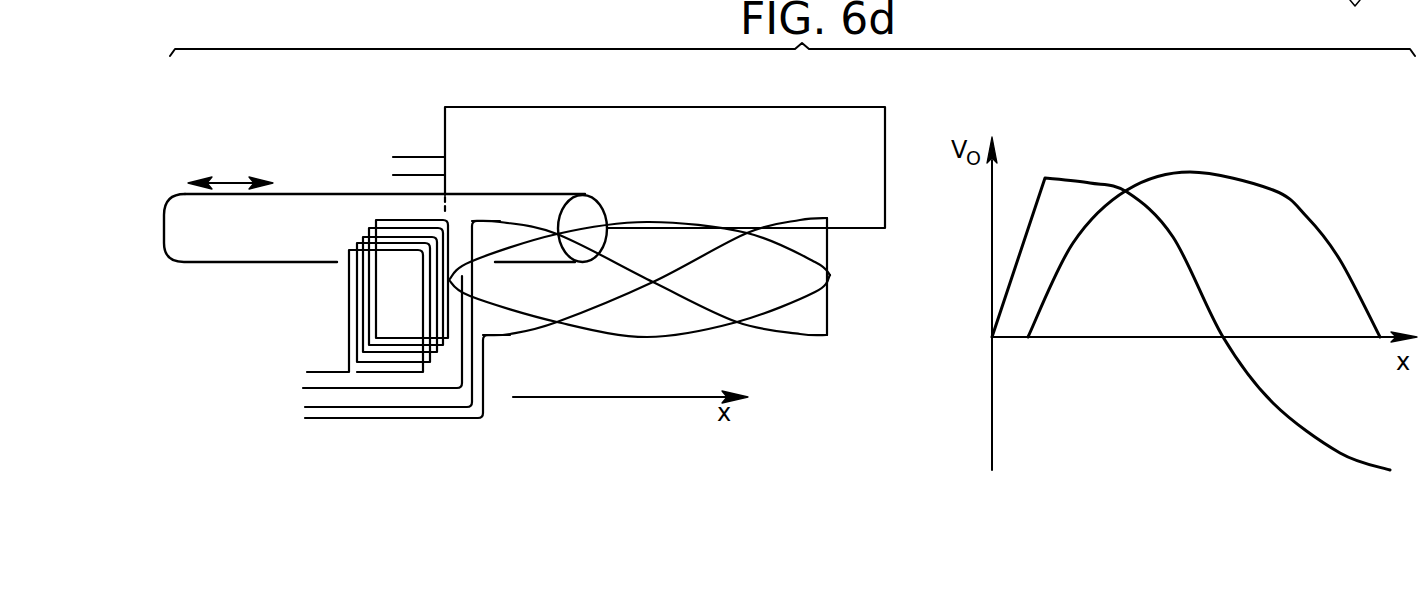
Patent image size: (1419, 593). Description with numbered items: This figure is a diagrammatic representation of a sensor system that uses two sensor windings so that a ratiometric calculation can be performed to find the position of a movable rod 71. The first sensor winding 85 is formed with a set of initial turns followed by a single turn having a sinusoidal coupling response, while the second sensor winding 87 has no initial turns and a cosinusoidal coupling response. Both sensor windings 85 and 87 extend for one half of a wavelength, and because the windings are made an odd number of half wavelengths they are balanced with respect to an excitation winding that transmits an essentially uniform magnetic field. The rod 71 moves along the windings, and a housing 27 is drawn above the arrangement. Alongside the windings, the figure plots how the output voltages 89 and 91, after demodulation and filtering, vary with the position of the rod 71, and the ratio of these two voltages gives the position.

The housing 27 is at (710, 107).
The rod 71 is at (296, 200).
The first sensor winding 85 is at (349, 305).
The second sensor winding 87 is at (518, 337).
The output voltage 89 is at (1098, 182).
The output voltage 91 is at (1212, 172).